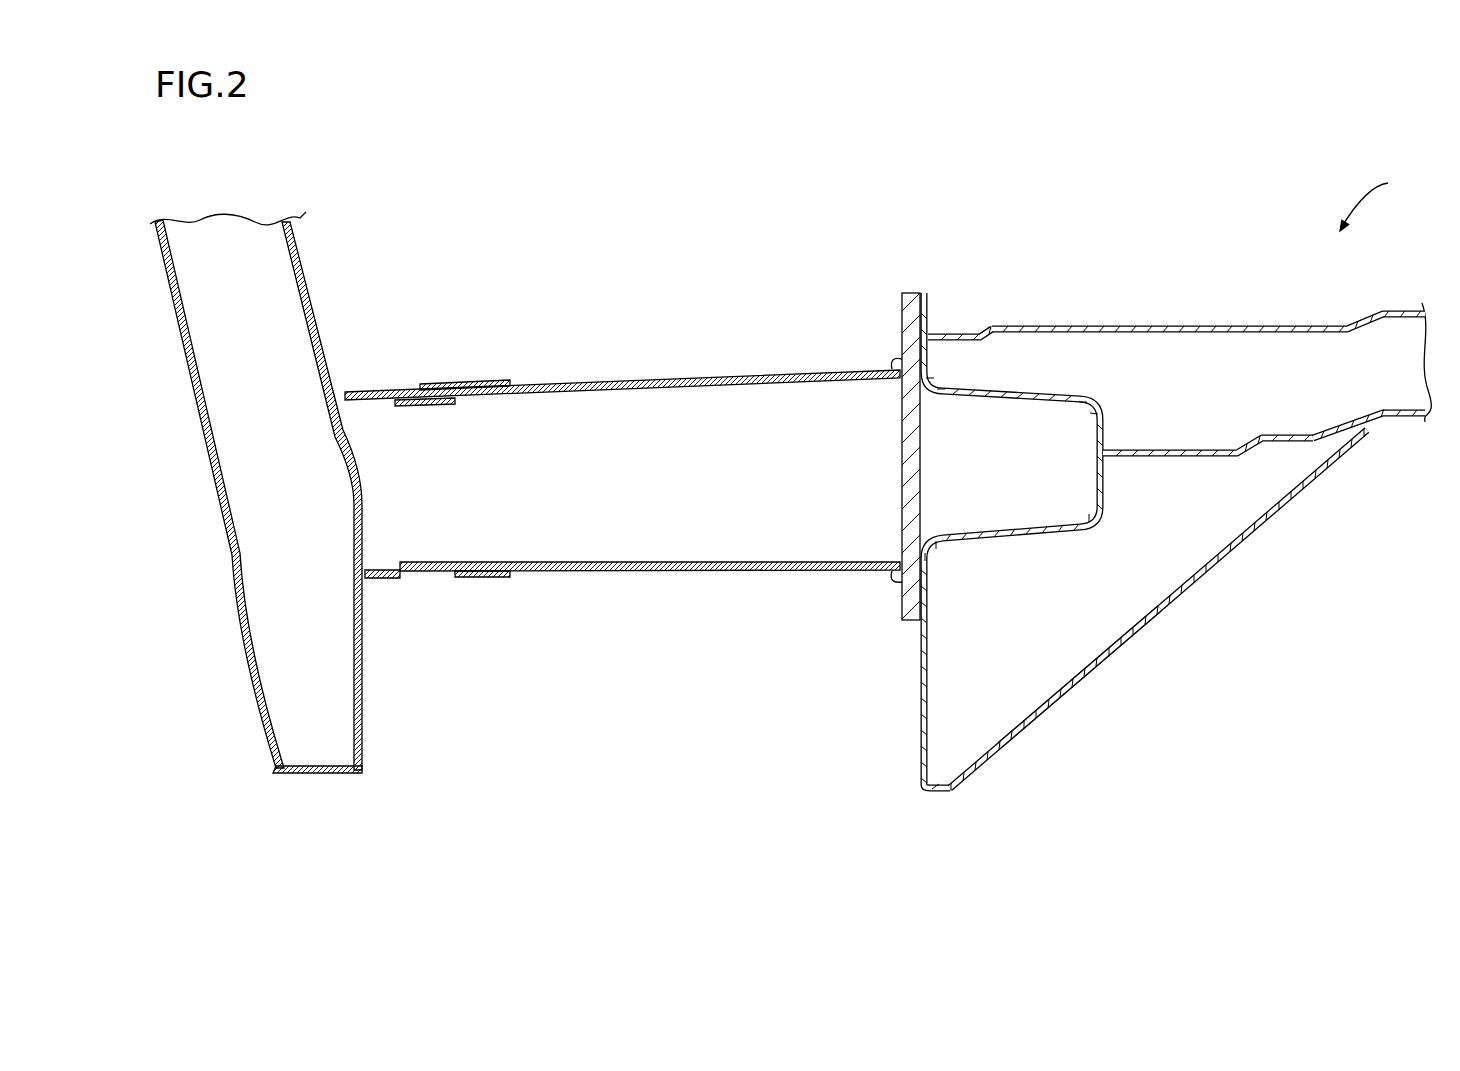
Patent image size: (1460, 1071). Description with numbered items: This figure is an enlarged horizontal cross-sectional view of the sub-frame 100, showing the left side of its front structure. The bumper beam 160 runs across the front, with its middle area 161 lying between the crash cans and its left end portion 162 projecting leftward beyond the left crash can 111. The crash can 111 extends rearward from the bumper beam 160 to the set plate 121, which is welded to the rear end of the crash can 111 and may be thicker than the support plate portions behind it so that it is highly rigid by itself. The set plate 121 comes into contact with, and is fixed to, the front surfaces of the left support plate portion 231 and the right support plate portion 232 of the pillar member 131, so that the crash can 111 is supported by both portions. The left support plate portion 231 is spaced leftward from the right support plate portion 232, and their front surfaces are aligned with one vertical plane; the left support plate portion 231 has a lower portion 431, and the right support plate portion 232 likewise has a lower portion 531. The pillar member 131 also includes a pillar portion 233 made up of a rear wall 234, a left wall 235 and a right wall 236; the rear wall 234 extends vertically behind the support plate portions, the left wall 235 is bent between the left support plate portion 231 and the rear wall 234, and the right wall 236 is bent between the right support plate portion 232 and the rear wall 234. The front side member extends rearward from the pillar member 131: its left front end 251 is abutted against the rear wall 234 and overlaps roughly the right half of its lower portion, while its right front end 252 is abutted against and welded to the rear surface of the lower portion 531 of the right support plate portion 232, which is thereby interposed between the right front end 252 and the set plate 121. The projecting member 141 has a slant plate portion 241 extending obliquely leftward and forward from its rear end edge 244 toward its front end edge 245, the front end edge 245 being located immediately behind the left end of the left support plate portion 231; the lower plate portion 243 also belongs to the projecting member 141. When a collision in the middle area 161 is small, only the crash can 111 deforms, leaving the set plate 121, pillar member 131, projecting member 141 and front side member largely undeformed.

The sub-frame 100 is at (1432, 193).
The crash can 111 is at (607, 380).
The set plate 121 is at (902, 600).
The pillar member 131 is at (1105, 530).
The projecting member 141 is at (908, 790).
The bumper beam 160 is at (270, 787).
The middle area 161 is at (220, 273).
The left end portion 162 is at (335, 680).
The left support plate portion 231 is at (915, 678).
The right support plate portion 232 is at (928, 305).
The pillar portion 233 is at (1107, 403).
The rear wall 234 is at (1105, 490).
The left wall 235 is at (1015, 540).
The right wall 236 is at (1023, 387).
The slant plate portion 241 is at (1105, 665).
The lower plate portion 243 is at (1225, 505).
The rear end edge 244 is at (1375, 425).
The front end edge 245 is at (947, 795).
The left front end 251 is at (1095, 425).
The right front end 252 is at (905, 352).
The lower portion 431 is at (925, 572).
The lower portion 531 is at (932, 364).